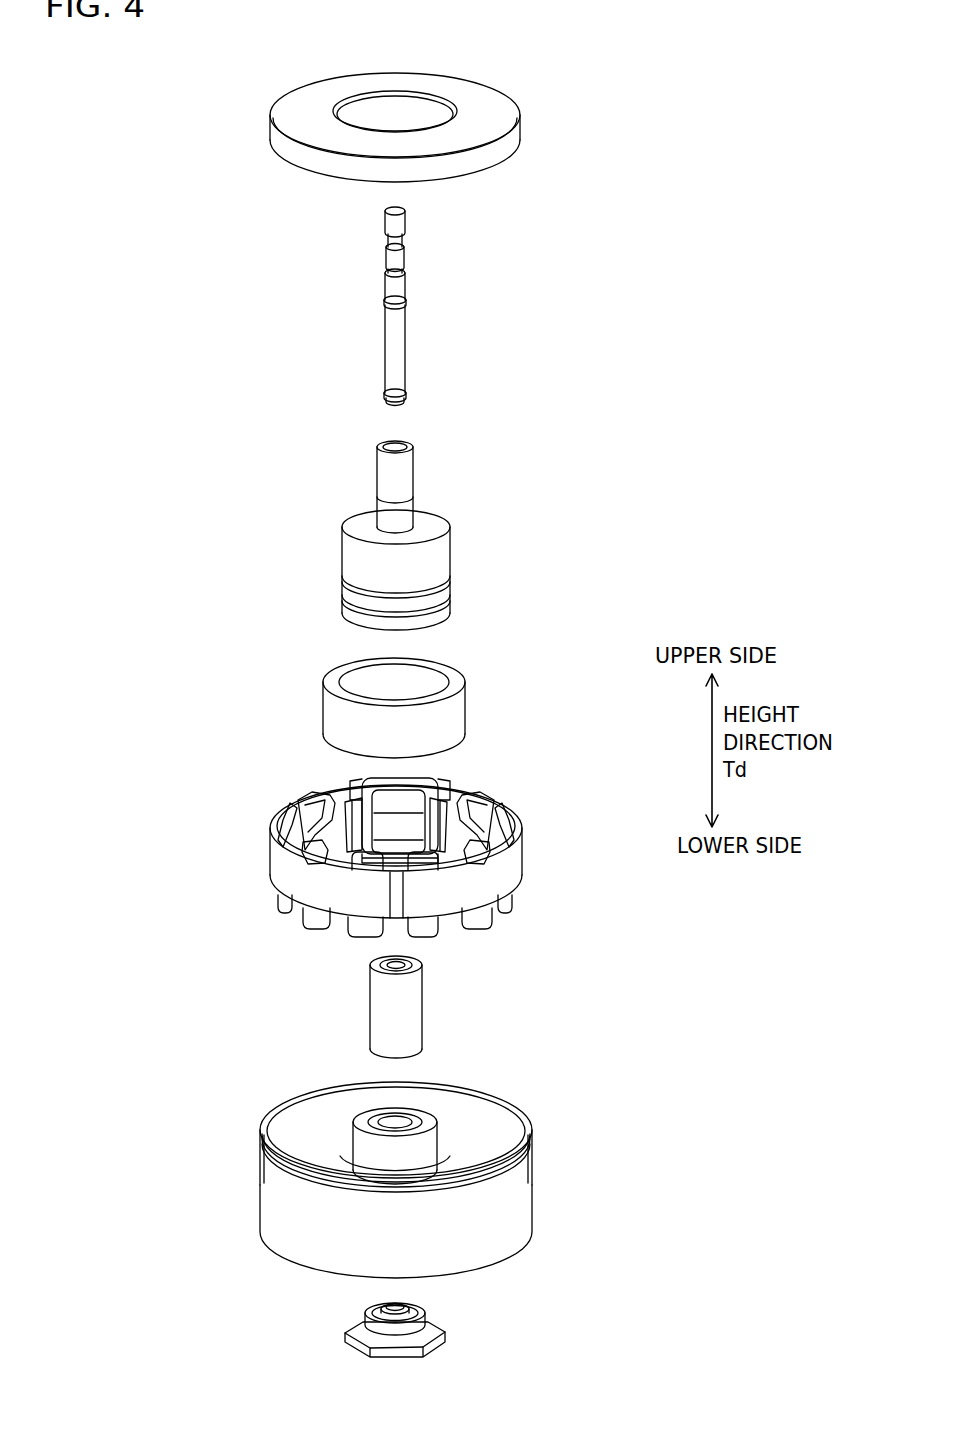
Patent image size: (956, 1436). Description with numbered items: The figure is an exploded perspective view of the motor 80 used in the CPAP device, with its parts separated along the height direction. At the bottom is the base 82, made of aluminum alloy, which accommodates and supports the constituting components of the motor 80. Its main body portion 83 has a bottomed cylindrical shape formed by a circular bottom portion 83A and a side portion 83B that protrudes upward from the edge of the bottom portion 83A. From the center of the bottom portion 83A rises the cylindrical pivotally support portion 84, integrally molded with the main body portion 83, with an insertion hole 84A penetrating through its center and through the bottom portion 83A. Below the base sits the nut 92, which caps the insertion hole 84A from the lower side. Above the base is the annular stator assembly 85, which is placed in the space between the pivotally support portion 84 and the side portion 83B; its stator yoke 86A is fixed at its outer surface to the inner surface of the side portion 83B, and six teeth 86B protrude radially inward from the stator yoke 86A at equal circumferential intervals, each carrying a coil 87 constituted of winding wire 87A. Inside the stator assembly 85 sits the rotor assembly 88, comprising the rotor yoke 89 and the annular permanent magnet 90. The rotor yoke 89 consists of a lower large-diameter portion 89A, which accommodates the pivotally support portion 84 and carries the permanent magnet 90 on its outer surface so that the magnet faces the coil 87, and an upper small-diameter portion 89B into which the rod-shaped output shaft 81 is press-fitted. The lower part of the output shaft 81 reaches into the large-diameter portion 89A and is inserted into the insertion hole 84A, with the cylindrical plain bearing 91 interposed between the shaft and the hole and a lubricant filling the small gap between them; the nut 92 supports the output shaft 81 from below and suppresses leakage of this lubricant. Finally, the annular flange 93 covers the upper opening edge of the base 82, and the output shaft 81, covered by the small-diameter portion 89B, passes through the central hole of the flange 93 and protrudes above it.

The motor 80 is at (150, 186).
The flange 93 is at (520, 126).
The output shaft 81 is at (405, 320).
The rotor assembly 88 is at (279, 540).
The rotor yoke 89 is at (502, 521).
The large-diameter portion 89A is at (450, 550).
The small-diameter portion 89B is at (415, 505).
The permanent magnet 90 is at (465, 710).
The stator assembly 85 is at (231, 835).
The stator yoke 86A is at (521, 856).
The teeth 86B is at (440, 783).
The coil 87 is at (295, 782).
The winding wire 87A is at (473, 834).
The plain bearing 91 is at (422, 1000).
The base 82 is at (233, 1151).
The main body portion 83 is at (530, 1125).
The bottom portion 83A is at (455, 1276).
The side portion 83B is at (532, 1218).
The pivotally support portion 84 is at (437, 1142).
The insertion hole 84A is at (412, 1118).
The nut 92 is at (430, 1348).